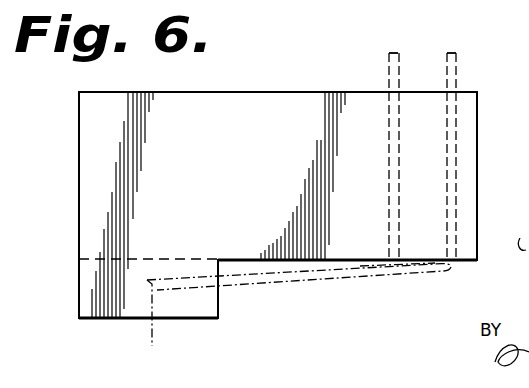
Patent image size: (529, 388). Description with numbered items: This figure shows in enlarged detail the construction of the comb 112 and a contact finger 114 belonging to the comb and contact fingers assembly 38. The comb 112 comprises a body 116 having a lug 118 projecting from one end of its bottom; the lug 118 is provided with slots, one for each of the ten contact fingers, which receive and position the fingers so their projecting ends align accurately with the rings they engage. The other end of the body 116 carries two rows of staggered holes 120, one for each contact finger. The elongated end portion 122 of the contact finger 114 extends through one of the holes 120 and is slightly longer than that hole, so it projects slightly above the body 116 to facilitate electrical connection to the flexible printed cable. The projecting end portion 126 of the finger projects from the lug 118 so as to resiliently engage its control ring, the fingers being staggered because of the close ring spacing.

The comb and contact fingers assembly 38 is at (78, 156).
The comb 112 is at (78, 202).
The contact finger 114 is at (410, 268).
The body 116 is at (100, 92).
The lug 118 is at (200, 300).
The holes 120 is at (388, 127).
The elongated end portion 122 is at (451, 58).
The projecting end portion 126 is at (152, 346).